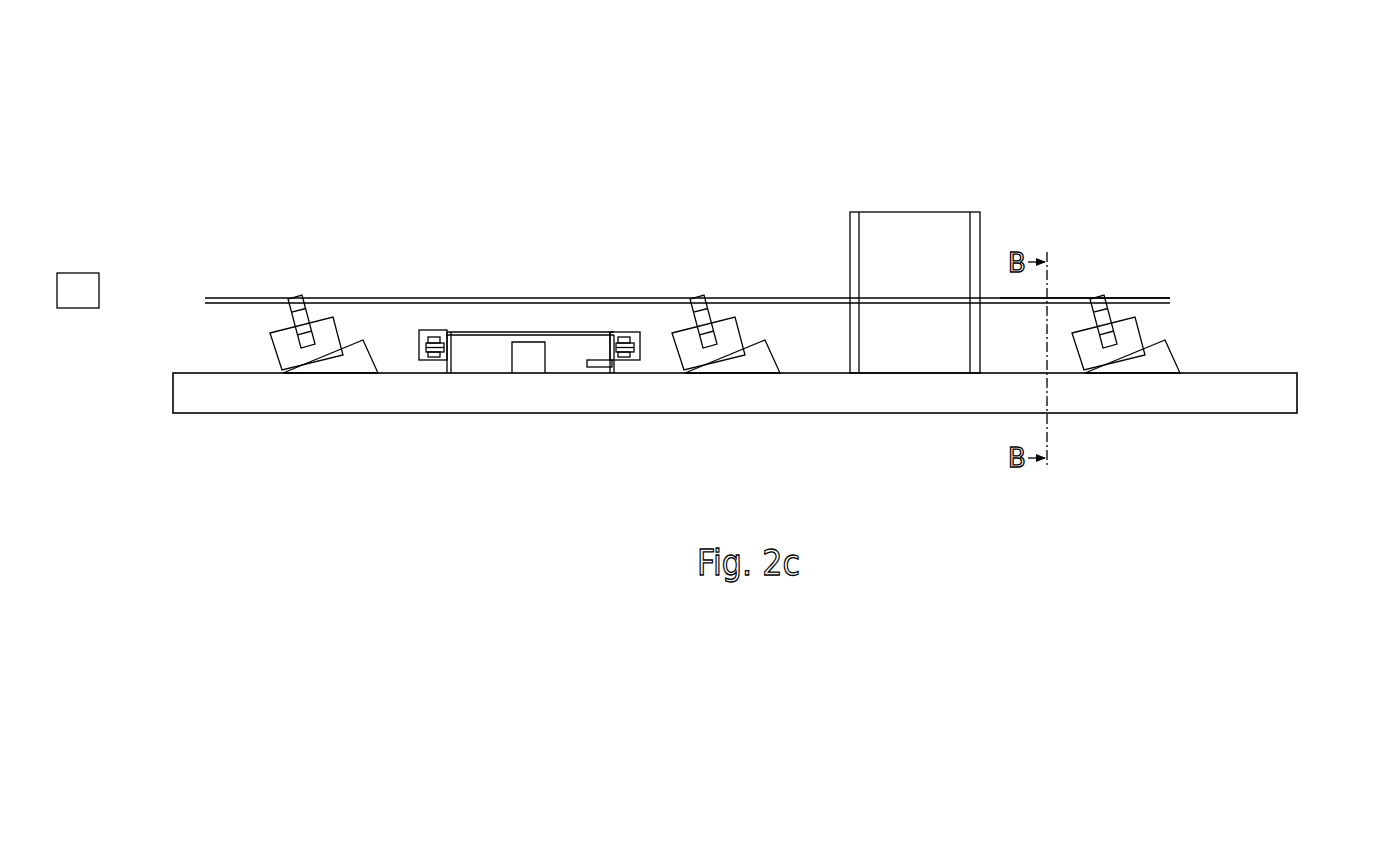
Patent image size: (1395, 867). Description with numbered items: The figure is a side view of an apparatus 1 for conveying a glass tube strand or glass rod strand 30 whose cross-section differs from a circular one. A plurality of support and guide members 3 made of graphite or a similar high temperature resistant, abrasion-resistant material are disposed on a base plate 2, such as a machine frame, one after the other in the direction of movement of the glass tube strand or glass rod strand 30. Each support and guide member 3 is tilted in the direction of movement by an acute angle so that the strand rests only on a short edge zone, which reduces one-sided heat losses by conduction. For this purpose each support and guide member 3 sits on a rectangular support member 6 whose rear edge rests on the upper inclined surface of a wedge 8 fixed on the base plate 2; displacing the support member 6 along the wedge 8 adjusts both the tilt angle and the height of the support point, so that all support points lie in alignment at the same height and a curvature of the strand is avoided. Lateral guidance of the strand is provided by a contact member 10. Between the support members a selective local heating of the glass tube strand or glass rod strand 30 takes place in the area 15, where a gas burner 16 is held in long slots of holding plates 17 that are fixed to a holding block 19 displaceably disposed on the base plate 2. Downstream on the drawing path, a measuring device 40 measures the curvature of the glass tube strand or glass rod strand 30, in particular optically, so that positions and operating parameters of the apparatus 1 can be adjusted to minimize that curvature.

The apparatus 1 is at (766, 121).
The base plate 2 is at (1290, 372).
The support and guide member 3 is at (1102, 300).
The support member 6 is at (733, 327).
The wedge 8 is at (1167, 362).
The contact member 10 is at (957, 223).
The heating area 15 is at (521, 275).
The gas burner 16 is at (620, 332).
The holding plate 17 is at (433, 360).
The holding block 19 is at (632, 337).
The glass tube strand or glass rod strand 30 is at (1163, 298).
The measuring device 40 is at (80, 283).